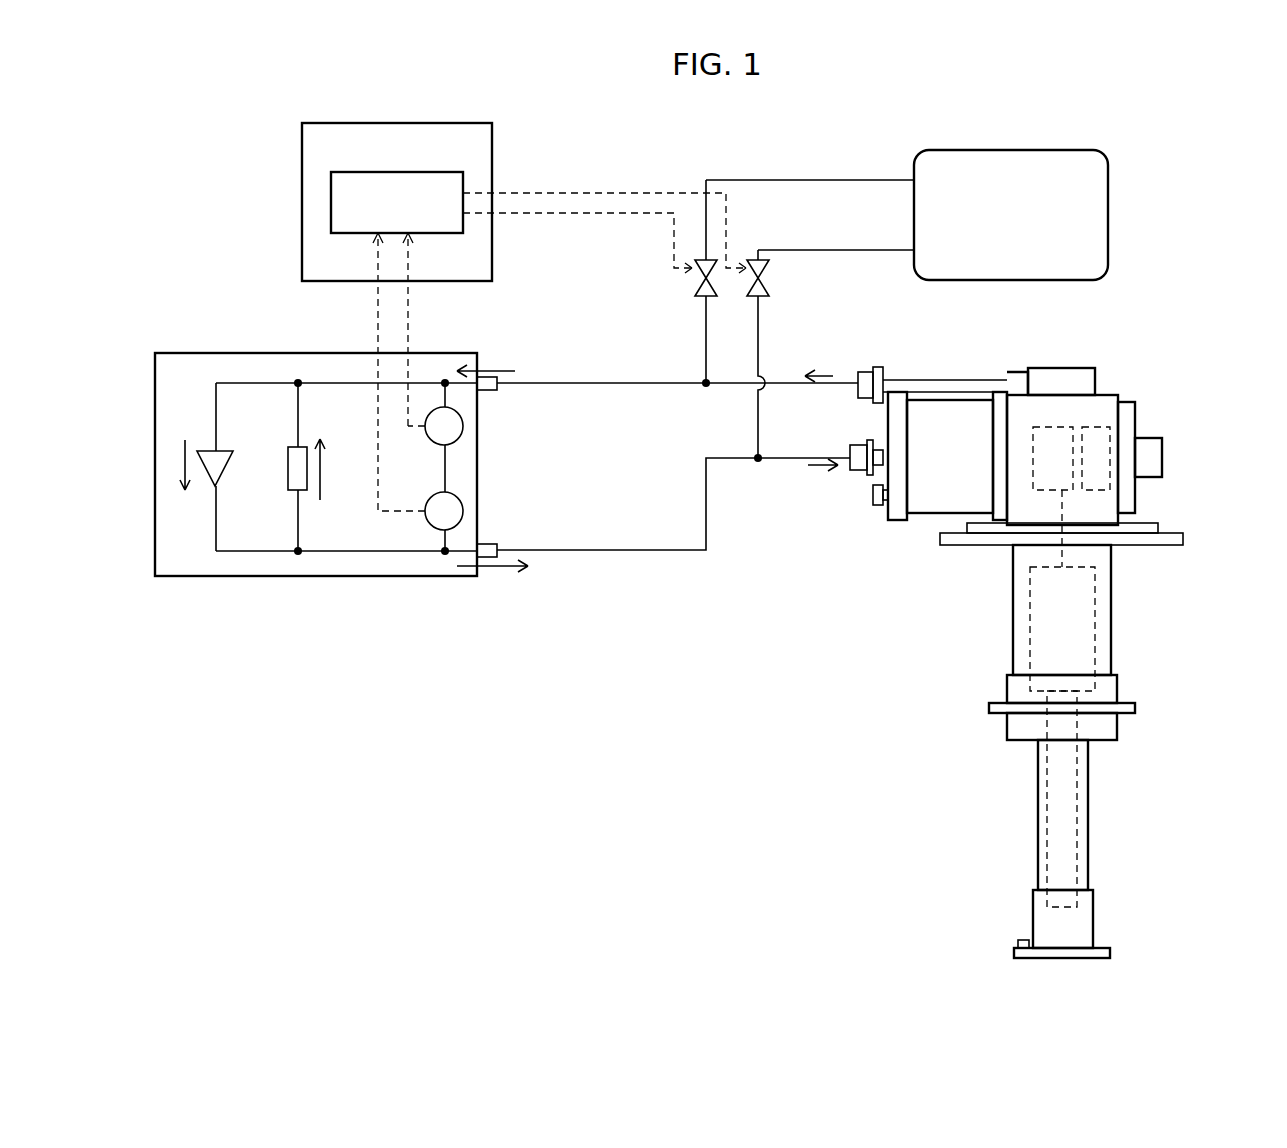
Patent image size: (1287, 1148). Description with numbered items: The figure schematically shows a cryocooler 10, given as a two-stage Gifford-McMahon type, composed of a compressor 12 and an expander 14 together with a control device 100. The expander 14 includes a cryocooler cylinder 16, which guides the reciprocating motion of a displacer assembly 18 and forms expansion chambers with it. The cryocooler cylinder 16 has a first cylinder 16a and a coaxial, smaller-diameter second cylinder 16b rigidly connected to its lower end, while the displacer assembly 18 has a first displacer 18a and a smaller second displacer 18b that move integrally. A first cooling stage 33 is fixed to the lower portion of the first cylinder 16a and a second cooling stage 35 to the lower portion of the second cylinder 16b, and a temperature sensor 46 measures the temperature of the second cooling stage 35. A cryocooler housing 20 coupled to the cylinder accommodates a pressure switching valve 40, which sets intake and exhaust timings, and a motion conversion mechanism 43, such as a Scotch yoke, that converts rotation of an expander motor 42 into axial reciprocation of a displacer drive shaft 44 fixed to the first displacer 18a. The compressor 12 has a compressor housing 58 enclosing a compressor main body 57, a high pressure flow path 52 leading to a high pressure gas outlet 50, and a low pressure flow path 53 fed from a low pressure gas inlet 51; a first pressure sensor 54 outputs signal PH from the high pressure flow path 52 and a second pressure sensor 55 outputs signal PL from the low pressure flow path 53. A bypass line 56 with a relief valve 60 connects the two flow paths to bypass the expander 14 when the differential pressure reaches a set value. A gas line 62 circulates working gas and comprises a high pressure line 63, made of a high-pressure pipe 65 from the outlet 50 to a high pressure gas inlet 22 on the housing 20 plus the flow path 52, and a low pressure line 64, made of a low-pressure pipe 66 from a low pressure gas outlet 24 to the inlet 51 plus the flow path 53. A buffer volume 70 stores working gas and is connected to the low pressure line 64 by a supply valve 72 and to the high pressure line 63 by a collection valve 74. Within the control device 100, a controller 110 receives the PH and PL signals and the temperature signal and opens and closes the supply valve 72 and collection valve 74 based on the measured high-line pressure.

The cryocooler 10 is at (1175, 160).
The compressor 12 is at (191, 350).
The expander 14 is at (1145, 367).
The cryocooler cylinder 16 is at (872, 640).
The first cylinder 16a is at (1021, 627).
The second cylinder 16b is at (1040, 777).
The displacer assembly 18 is at (1238, 635).
The first displacer 18a is at (1097, 657).
The second displacer 18b is at (1077, 780).
The cryocooler housing 20 is at (1105, 394).
The high pressure gas inlet 22 is at (857, 444).
The low pressure gas outlet 24 is at (880, 366).
The first cooling stage 33 is at (1118, 685).
The second cooling stage 35 is at (1094, 922).
The pressure switching valve 40 is at (1100, 418).
The expander motor 42 is at (956, 398).
The motion conversion mechanism 43 is at (1050, 426).
The displacer drive shaft 44 is at (1063, 503).
The temperature sensor 46 is at (1025, 940).
The high pressure gas outlet 50 is at (490, 543).
The low pressure gas inlet 51 is at (490, 391).
The high pressure flow path 52 is at (420, 577).
The low pressure flow path 53 is at (349, 382).
The first pressure sensor 54 is at (428, 498).
The second pressure sensor 55 is at (427, 435).
The bypass line 56 is at (298, 408).
The compressor main body 57 is at (198, 451).
The compressor housing 58 is at (172, 577).
The relief valve 60 is at (288, 450).
The gas line 62 is at (648, 313).
The high pressure line 63 is at (613, 547).
The low pressure line 64 is at (581, 381).
The high-pressure pipe 65 is at (556, 553).
The low-pressure pipe 66 is at (540, 386).
The buffer volume 70 is at (1108, 207).
The supply valve 72 is at (716, 290).
The collection valve 74 is at (768, 290).
The control device 100 is at (302, 178).
The controller 110 is at (331, 212).